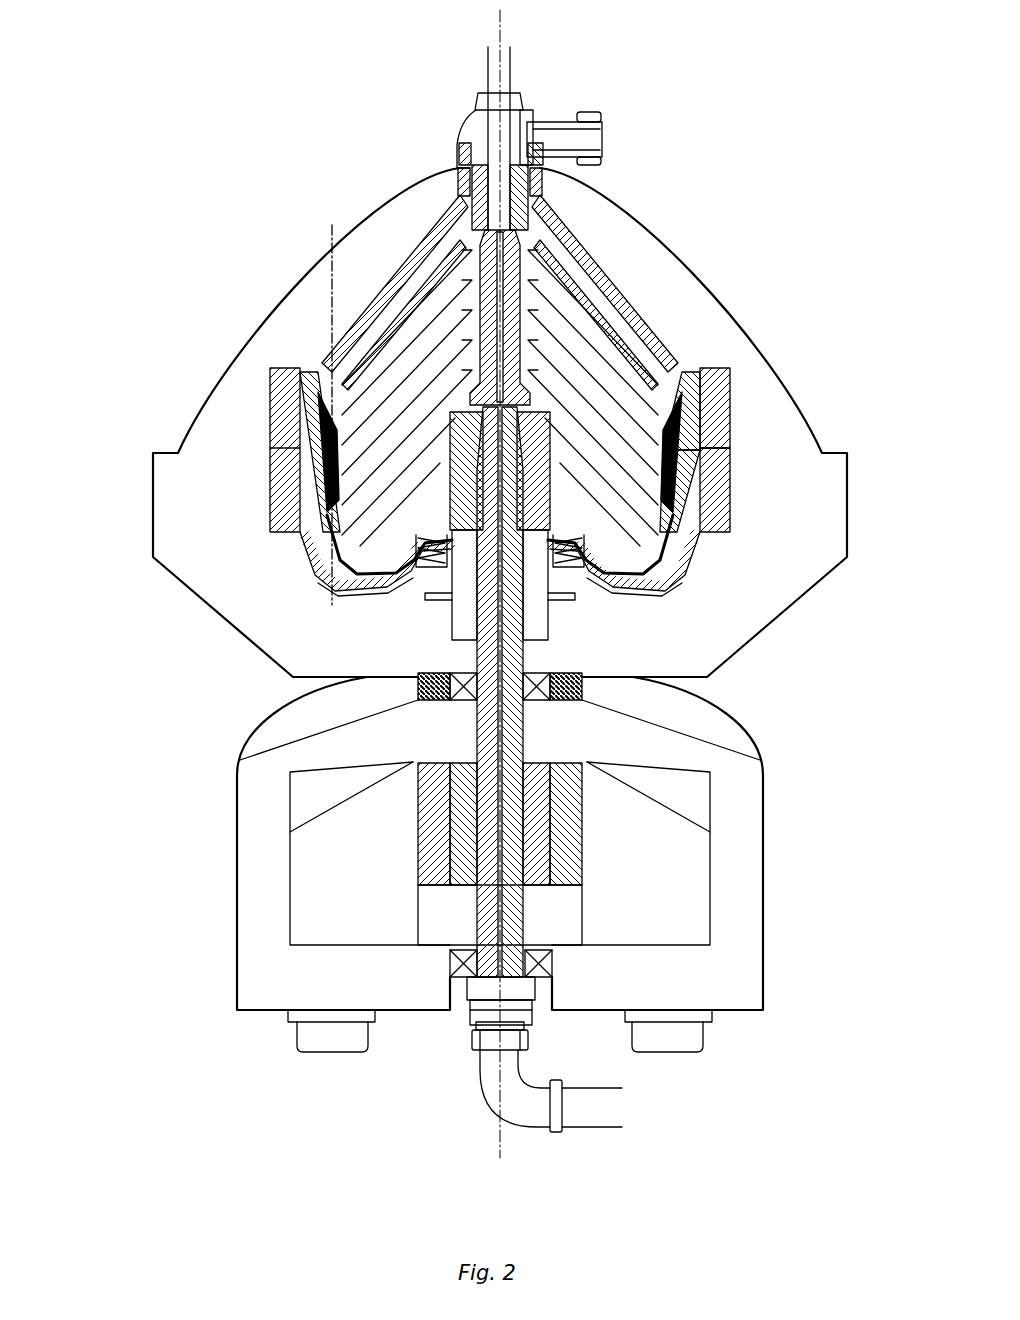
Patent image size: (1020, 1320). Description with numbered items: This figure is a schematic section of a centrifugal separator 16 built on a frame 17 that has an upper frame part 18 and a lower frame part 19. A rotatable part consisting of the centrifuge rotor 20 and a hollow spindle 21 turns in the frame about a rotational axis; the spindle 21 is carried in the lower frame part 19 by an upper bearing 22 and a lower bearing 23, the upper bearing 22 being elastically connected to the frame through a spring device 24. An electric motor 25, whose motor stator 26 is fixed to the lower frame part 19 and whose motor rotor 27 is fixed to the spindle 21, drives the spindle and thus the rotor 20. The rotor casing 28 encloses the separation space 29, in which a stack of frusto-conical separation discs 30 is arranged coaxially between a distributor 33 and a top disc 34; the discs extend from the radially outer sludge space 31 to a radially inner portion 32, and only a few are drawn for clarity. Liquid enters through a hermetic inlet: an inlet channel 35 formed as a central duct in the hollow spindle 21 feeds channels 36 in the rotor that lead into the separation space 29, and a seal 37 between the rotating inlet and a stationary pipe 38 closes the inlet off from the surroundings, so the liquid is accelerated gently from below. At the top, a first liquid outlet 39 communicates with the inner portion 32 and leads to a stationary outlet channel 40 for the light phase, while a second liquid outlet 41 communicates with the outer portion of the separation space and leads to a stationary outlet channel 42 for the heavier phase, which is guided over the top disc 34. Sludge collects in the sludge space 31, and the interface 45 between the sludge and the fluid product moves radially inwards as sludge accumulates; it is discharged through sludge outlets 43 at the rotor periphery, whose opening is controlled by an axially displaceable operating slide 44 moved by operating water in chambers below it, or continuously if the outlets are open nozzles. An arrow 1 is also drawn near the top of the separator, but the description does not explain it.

The inlet flow arrow 1 is at (483, 127).
The centrifugal separator 16 is at (303, 158).
The frame 17 is at (210, 742).
The upper frame part 18 is at (165, 568).
The lower frame part 19 is at (237, 858).
The centrifuge rotor 20 is at (297, 340).
The hollow spindle 21 is at (470, 740).
The upper bearing 22 is at (462, 673).
The lower bearing 23 is at (553, 963).
The spring device 24 is at (440, 690).
The electric motor 25 is at (400, 848).
The motor stator 26 is at (580, 862).
The motor rotor 27 is at (530, 893).
The rotor casing 28 is at (733, 410).
The separation space 29 is at (648, 405).
The separation discs 30 is at (575, 322).
The sludge space 31 is at (730, 500).
The radially inner portion 32 is at (520, 270).
The distributor 33 is at (457, 445).
The top disc 34 is at (457, 238).
The inlet channel 35 is at (410, 545).
The channels 36 is at (410, 485).
The seal 37 is at (462, 1030).
The stationary part 38 is at (593, 1100).
The first liquid outlet 39 is at (500, 165).
The stationary outlet channel 40 is at (488, 80).
The second liquid outlet 41 is at (520, 195).
The stationary outlet channel 42 is at (563, 118).
The sludge outlets 43 is at (722, 452).
The operating slide 44 is at (655, 582).
The interface 45 is at (335, 302).